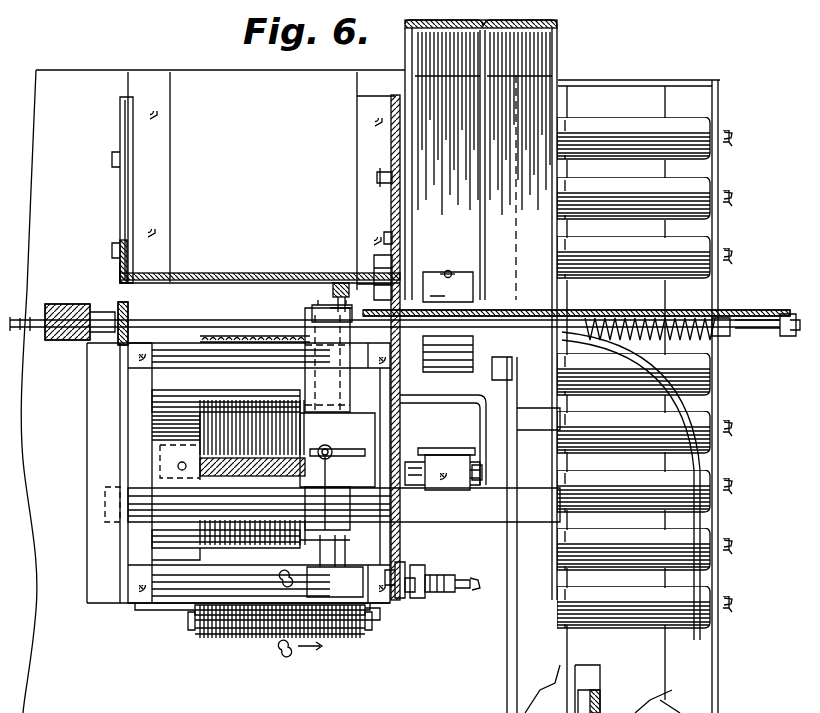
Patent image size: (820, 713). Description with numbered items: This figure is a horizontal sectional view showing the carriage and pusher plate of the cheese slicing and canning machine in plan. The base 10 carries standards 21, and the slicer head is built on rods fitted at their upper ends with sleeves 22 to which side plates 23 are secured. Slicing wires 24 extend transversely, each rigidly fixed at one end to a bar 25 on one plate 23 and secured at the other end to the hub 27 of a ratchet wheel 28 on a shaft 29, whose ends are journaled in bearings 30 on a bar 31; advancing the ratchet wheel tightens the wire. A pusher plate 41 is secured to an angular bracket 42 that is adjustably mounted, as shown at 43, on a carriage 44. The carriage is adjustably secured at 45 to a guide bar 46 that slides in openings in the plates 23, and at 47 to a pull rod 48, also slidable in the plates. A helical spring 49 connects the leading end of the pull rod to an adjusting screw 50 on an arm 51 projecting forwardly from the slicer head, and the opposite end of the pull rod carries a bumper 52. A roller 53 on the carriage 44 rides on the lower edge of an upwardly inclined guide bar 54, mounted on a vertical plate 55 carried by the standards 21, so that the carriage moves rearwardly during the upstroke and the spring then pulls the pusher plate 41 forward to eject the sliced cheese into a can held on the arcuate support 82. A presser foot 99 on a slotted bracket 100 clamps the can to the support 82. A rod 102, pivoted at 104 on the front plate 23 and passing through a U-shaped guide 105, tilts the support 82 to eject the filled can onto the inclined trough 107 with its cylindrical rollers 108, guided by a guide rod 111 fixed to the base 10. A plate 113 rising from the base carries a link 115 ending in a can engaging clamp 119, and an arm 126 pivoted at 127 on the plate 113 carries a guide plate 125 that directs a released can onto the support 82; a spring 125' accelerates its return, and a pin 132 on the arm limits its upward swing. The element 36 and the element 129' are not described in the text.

The base 10 is at (62, 78).
The standards 21 is at (155, 172).
The sleeves 22 is at (132, 352).
The plates 23 is at (120, 405).
The slicing wires 24 is at (410, 583).
The bar 25 is at (258, 336).
The hub 27 is at (205, 632).
The ratchet wheel 28 is at (234, 634).
The shaft 29 is at (382, 625).
The bearings 30 is at (192, 622).
The bar 31 is at (162, 612).
The guide plate 36 is at (160, 392).
The pusher plate 41 is at (372, 434).
The angular bracket 42 is at (400, 480).
The adjustable mounting 43 is at (327, 493).
The carriage 44 is at (322, 384).
The adjustable connection 45 is at (312, 545).
The guide bar 46 is at (145, 492).
The adjustable connection 47 is at (318, 305).
The pull rod 48 is at (202, 320).
The helical spring 49 is at (720, 318).
The adjusting screw 50 is at (753, 340).
The arm 51 is at (768, 318).
The bumper 52 is at (75, 302).
The roller 53 is at (331, 280).
The inclined guide bar 54 is at (360, 298).
The vertical plate 55 is at (260, 273).
The arcuate support 82 is at (470, 545).
The presser foot 99 is at (450, 452).
The slotted bracket 100 is at (476, 485).
The rod 102 is at (450, 590).
The pivot 104 is at (475, 592).
The U-shaped guide 105 is at (460, 574).
The inclined trough 107 is at (712, 687).
The cylindrical rollers 108 is at (605, 562).
The guide rod 111 is at (700, 430).
The plate 113 is at (398, 130).
The link 115 is at (450, 273).
The can engaging clamp 119 is at (470, 300).
The guide plate 125 is at (545, 535).
The spring 125' is at (482, 129).
The arm 126 is at (412, 246).
The pivot 127 is at (380, 176).
The tube 129' is at (443, 430).
The pin 132 is at (388, 235).